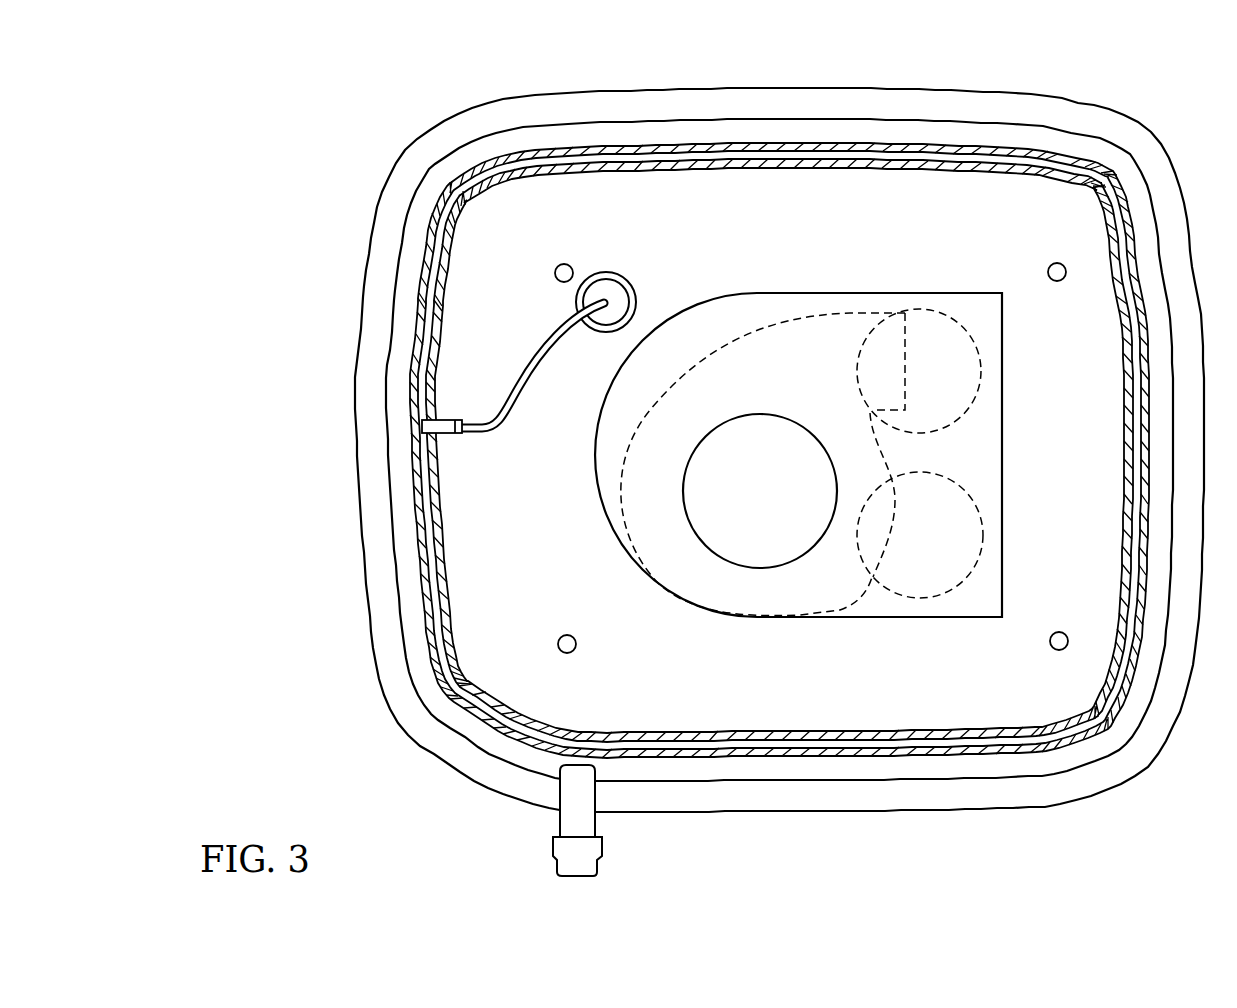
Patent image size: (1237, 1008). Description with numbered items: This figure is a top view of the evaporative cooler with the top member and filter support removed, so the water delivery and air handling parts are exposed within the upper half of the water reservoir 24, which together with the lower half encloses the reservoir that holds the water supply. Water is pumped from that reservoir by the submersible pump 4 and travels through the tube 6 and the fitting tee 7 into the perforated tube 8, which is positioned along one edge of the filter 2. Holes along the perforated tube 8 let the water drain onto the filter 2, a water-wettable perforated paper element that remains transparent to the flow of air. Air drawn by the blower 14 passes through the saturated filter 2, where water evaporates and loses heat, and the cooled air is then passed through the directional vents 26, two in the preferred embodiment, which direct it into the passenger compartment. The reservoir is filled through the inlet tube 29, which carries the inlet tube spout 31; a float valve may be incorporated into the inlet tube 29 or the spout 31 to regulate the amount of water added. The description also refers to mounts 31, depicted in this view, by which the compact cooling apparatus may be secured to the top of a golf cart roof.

The filter 2 is at (1117, 200).
The submersible pump 4 is at (614, 292).
The tube 6 is at (493, 417).
The fitting tee 7 is at (433, 440).
The perforated tube 8 is at (794, 450).
The blower 14 is at (773, 350).
The upper half of the water reservoir 24 is at (1090, 125).
The directional vents 26 is at (973, 400).
The inlet tube 29 is at (590, 820).
The inlet tube spout 31 is at (562, 865).